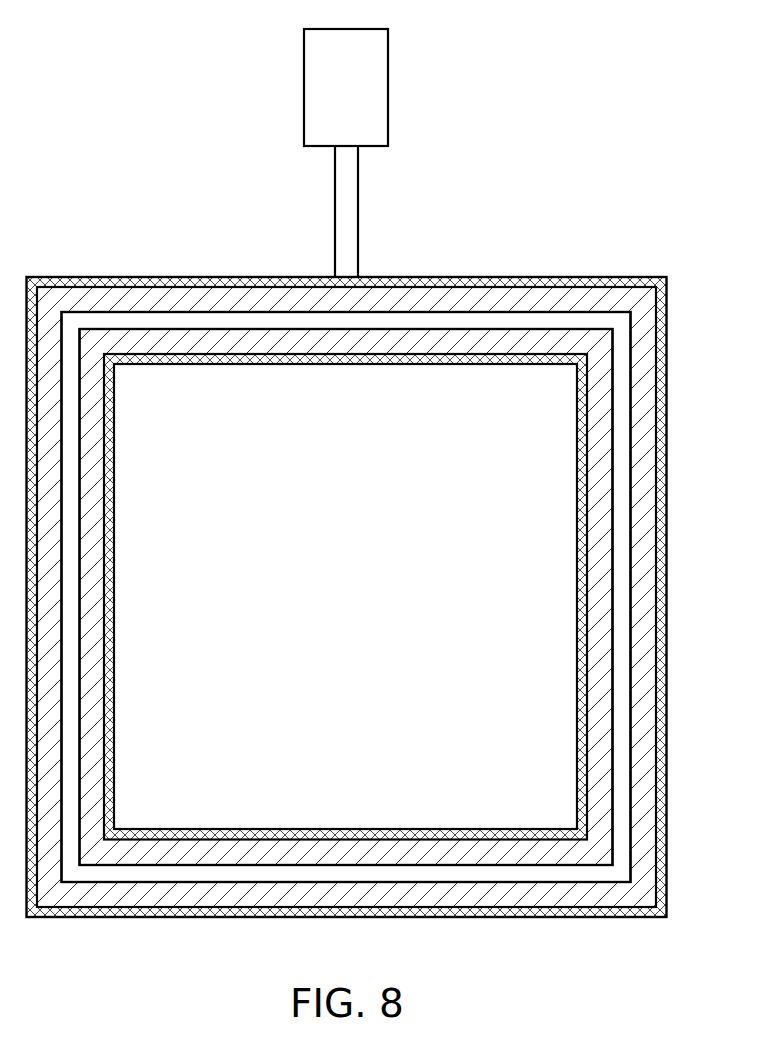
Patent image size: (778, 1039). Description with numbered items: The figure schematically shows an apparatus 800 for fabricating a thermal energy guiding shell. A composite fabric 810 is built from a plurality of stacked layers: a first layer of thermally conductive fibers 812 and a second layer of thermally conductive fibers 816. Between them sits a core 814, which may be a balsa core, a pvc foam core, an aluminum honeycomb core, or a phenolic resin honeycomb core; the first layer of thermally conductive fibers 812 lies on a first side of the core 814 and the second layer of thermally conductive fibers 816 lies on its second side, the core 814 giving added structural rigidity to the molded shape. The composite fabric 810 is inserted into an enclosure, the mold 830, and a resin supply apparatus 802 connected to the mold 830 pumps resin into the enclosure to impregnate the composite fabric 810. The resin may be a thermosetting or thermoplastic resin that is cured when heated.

The apparatus 800 is at (383, 473).
The resin supply apparatus 802 is at (380, 72).
The composite fabric 810 is at (382, 573).
The first layer of thermally conductive fibers 812 is at (400, 292).
The core 814 is at (457, 320).
The second layer of thermally conductive fibers 816 is at (518, 340).
The mold 830 is at (662, 395).